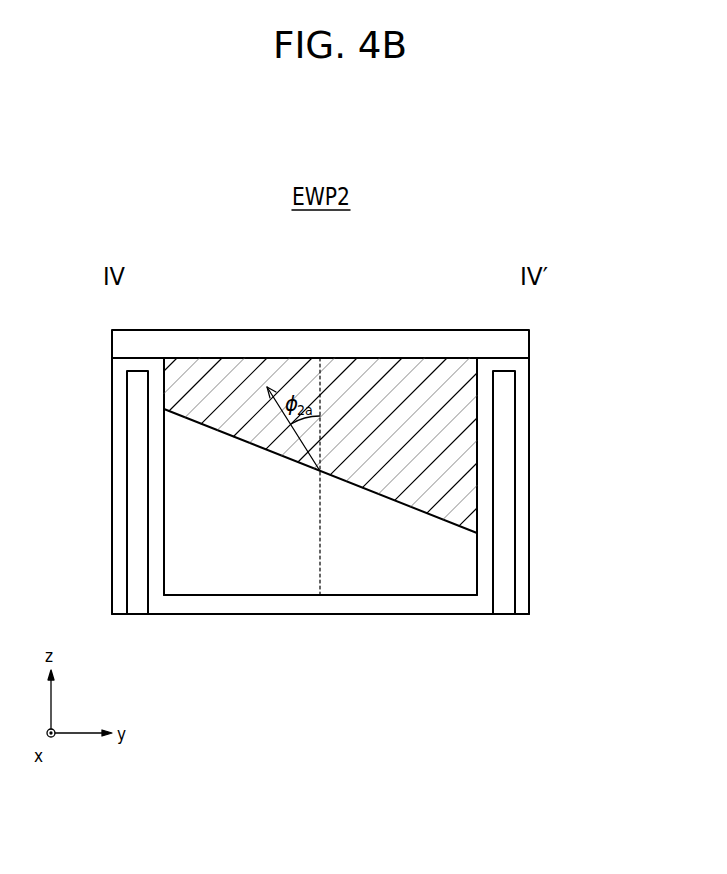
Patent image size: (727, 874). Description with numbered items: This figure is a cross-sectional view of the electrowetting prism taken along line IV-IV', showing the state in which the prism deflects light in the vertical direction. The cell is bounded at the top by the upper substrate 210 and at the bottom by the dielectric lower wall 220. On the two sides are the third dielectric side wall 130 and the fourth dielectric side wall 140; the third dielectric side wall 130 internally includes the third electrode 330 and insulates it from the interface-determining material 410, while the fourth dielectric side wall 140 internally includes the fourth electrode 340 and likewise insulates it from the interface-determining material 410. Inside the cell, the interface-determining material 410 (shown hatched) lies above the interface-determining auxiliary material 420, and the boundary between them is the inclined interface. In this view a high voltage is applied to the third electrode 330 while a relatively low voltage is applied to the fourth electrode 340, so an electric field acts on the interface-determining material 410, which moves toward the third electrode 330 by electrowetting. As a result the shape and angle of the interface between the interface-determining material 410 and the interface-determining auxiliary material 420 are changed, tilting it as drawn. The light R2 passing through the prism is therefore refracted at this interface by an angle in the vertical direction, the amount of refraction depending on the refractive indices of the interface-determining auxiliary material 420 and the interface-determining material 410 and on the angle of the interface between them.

The upper substrate 210 is at (518, 345).
The dielectric lower wall 220 is at (417, 605).
The third dielectric side wall 130 is at (485, 398).
The fourth dielectric side wall 140 is at (157, 433).
The third electrode 330 is at (502, 497).
The fourth electrode 340 is at (135, 506).
The interface-determining material 410 is at (452, 455).
The interface-determining auxiliary material 420 is at (452, 572).
The light R2 is at (322, 548).